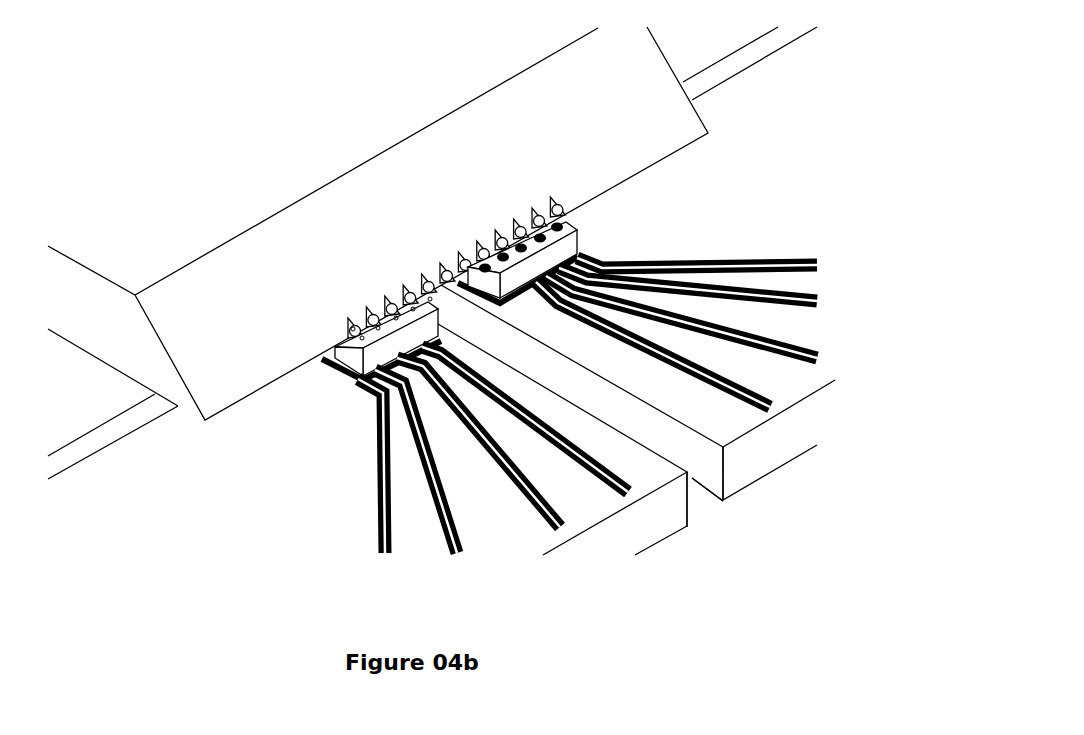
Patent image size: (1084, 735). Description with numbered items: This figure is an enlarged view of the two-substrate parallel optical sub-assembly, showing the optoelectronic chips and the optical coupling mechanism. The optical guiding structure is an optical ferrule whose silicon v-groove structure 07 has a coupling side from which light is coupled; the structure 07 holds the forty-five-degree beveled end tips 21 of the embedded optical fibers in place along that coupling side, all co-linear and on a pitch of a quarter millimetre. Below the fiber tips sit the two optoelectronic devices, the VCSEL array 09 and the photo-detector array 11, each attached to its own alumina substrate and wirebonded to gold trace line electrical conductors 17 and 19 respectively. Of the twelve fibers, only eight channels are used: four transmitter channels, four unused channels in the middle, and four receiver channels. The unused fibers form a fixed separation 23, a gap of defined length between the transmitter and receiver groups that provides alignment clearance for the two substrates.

The silicon v-groove structure 07 is at (280, 298).
The VCSEL array 09 is at (340, 373).
The photo-detector array 11 is at (578, 229).
The gold trace line electrical conductors 17 is at (380, 512).
The gold trace line electrical conductors 19 is at (717, 263).
The beveled end tips 21 is at (350, 318).
The separation 23 is at (703, 506).